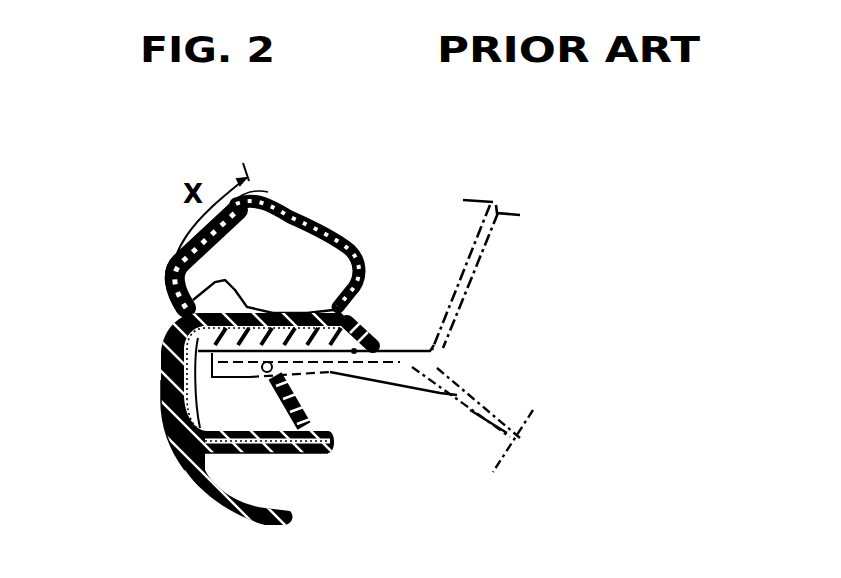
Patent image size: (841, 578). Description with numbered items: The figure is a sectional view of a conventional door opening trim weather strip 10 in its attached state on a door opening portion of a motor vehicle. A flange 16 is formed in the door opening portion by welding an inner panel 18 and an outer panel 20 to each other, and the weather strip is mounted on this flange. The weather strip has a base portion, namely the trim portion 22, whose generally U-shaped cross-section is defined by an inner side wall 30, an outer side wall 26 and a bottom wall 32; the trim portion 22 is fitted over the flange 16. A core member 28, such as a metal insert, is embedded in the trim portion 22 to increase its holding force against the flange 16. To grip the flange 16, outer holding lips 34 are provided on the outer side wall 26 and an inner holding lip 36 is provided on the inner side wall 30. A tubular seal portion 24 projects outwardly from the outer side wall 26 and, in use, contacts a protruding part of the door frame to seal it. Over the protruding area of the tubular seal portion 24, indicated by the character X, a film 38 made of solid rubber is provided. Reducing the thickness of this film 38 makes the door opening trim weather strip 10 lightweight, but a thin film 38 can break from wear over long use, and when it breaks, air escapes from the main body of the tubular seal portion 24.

The door opening trim weather strip 10 is at (160, 315).
The flange 16 is at (457, 395).
The inner panel 18 is at (470, 410).
The outer panel 20 is at (460, 295).
The trim portion 22 is at (172, 474).
The tubular seal portion 24 is at (297, 213).
The outer side wall 26 is at (202, 377).
The core member 28 is at (168, 447).
The inner side wall 30 is at (252, 452).
The bottom wall 32 is at (162, 403).
The outer holding lips 34 is at (178, 352).
The inner holding lip 36 is at (313, 402).
The film 38 is at (193, 230).